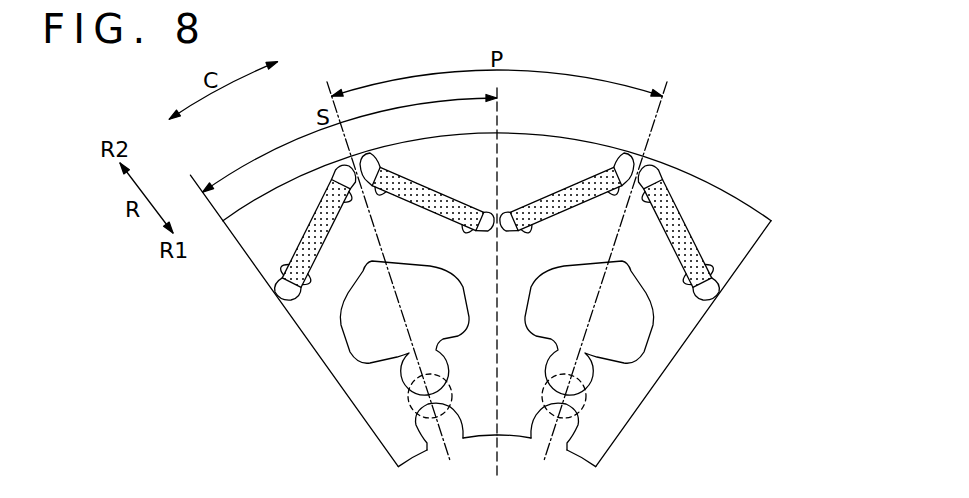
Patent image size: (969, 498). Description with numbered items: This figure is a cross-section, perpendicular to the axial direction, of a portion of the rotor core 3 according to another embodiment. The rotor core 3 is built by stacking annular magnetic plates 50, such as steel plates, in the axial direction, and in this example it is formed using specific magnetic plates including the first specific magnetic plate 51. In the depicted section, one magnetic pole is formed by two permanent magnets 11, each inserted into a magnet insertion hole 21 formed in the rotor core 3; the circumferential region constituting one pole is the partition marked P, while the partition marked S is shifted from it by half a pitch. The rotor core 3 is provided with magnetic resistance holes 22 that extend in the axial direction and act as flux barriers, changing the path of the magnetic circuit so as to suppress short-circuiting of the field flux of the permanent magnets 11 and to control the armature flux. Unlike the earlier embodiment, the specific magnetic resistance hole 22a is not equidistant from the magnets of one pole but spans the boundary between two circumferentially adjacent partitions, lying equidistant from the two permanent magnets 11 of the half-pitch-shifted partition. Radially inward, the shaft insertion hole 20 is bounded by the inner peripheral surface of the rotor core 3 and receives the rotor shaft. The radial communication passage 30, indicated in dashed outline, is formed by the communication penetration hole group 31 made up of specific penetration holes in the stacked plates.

The rotor core 3 is at (747, 203).
The permanent magnet 11 is at (298, 245).
The shaft insertion hole 20 is at (592, 477).
The magnet insertion hole 21 is at (311, 240).
The magnetic resistance hole 22 is at (363, 160).
The specific magnetic resistance hole 22a is at (354, 347).
The radial communication passage 30 is at (490, 411).
The communication penetration hole group 31 is at (400, 404).
The magnetic plate 50 is at (743, 327).
The first specific magnetic plate 51 is at (757, 223).